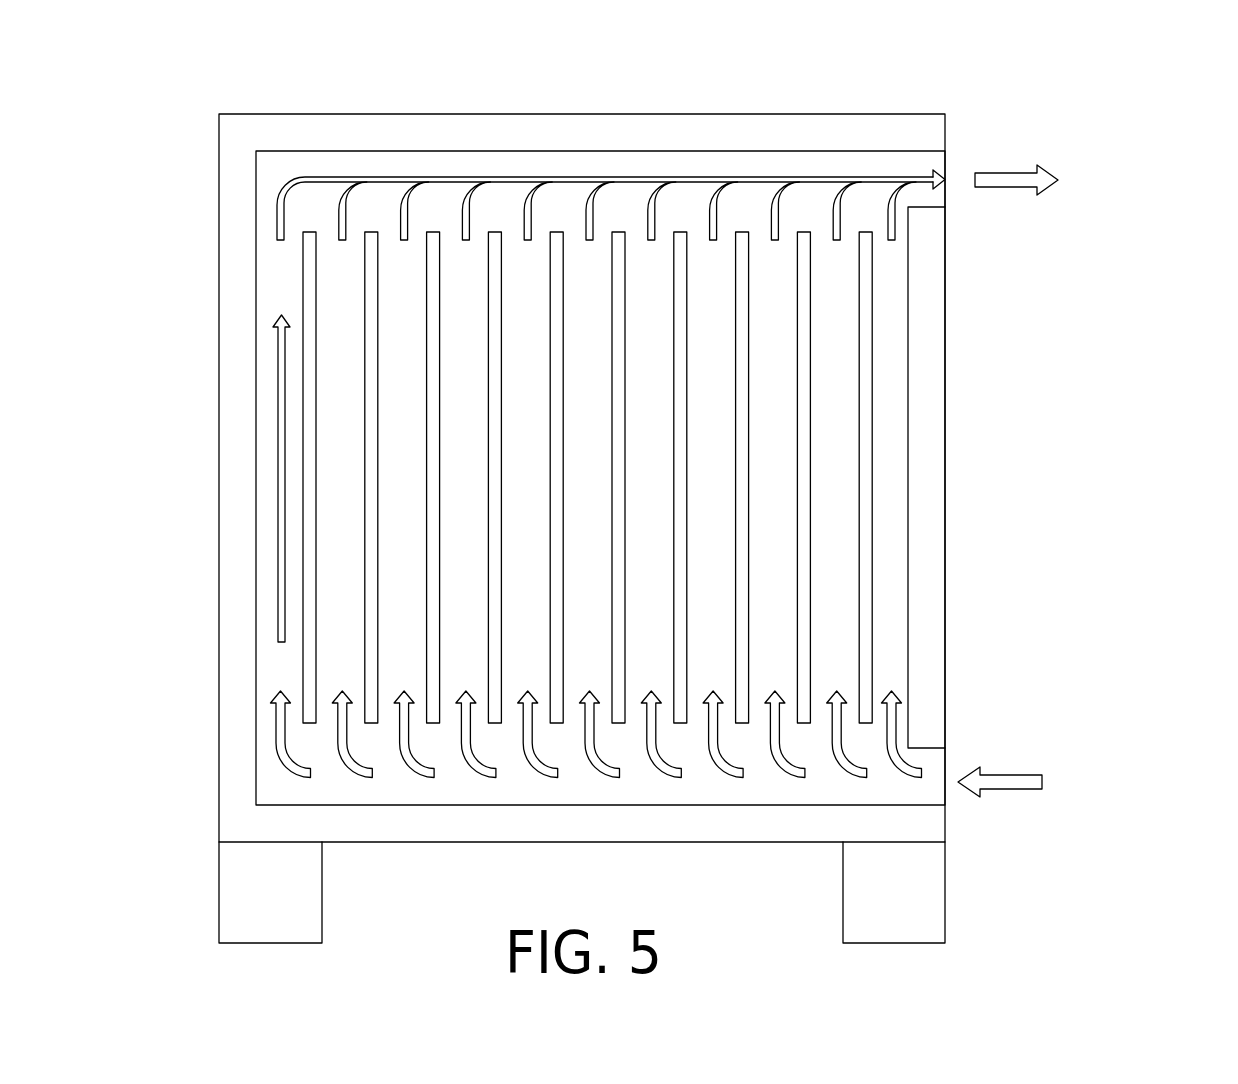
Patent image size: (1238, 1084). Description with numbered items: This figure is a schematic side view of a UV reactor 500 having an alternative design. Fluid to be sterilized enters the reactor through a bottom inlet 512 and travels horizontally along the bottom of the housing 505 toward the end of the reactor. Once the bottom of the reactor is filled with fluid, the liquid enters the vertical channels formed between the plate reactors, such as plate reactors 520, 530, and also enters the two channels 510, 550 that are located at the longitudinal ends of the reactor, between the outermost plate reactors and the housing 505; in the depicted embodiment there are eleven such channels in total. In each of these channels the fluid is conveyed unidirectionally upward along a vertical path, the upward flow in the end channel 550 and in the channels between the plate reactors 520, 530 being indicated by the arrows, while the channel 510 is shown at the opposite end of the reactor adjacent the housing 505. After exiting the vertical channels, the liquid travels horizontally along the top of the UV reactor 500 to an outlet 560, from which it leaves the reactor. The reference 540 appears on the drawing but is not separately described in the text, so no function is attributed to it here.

The UV reactor 500 is at (108, 130).
The housing 505 is at (937, 610).
The channel 510 is at (890, 493).
The bottom inlet 512 is at (945, 805).
The plate reactor 520 is at (783, 390).
The plate reactor 530 is at (595, 390).
The lower flow channels 540 is at (417, 380).
The channel 550 is at (278, 543).
The outlet 560 is at (945, 173).